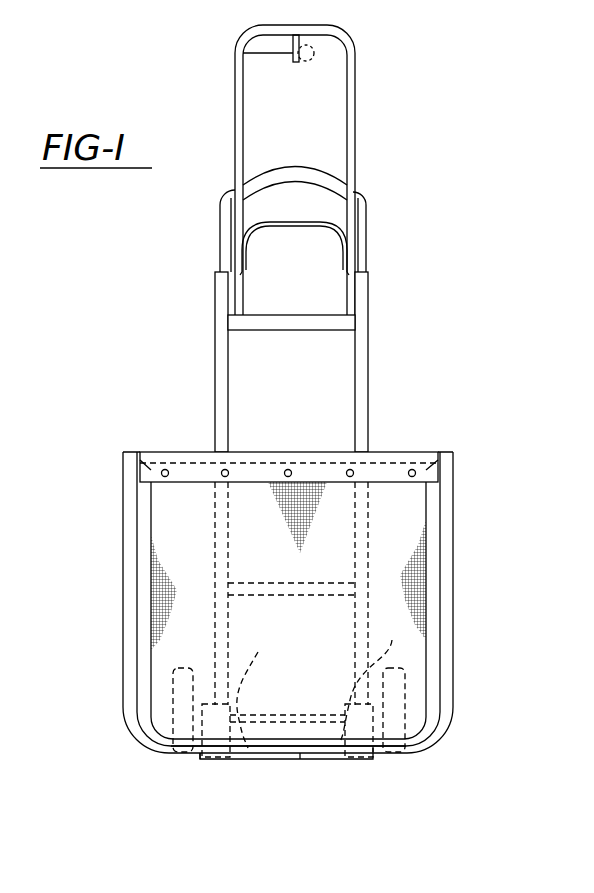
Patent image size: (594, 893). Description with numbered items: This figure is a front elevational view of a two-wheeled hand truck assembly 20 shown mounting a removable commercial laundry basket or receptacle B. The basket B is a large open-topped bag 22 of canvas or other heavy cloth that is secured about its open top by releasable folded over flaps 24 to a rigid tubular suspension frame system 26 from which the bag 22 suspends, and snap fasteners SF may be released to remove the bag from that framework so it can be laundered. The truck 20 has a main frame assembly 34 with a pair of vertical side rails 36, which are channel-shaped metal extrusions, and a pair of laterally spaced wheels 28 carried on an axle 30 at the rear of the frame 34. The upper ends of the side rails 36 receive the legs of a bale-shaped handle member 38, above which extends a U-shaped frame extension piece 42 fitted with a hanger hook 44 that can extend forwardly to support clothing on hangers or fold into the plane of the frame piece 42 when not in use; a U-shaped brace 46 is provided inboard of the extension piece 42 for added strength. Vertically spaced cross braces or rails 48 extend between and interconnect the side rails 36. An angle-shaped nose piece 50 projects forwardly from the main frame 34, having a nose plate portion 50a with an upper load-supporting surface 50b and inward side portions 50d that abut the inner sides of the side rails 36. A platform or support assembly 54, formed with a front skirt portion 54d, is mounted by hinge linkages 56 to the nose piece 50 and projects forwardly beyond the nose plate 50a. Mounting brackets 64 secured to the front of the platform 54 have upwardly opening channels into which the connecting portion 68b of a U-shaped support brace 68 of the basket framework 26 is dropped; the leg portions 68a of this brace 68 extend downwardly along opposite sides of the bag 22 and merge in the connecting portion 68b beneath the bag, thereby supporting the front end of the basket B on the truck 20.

The two-wheeled hand truck assembly 20 is at (362, 153).
The U-shaped frame extension piece 42 is at (357, 62).
The hanger hook 44 is at (300, 57).
The U-shaped brace 46 is at (265, 225).
The handle member 38 is at (367, 221).
The cross braces or rails 48 is at (262, 313).
The main frame assembly 34 is at (370, 308).
The vertical side rails 36 is at (369, 356).
The laundry basket or receptacle B is at (412, 445).
The open-topped bag 22 is at (152, 650).
The snap fasteners SF is at (432, 462).
The folded over flaps 24 is at (185, 478).
The suspension frame system 26 is at (150, 456).
The U-shaped support brace 68 is at (458, 496).
The leg portions 68a is at (452, 565).
The connecting portion 68b is at (340, 748).
The nose piece 50 is at (162, 736).
The wheels 28 is at (200, 722).
The hinge linkages 56 is at (206, 742).
The axle 30 is at (292, 740).
The inward side portions 50d is at (325, 679).
The nose plate portion 50a is at (302, 762).
The upper load-supporting surface 50b is at (372, 748).
The platform or support assembly 54 is at (258, 768).
The front skirt portion 54d is at (232, 762).
The mounting brackets 64 is at (473, 781).